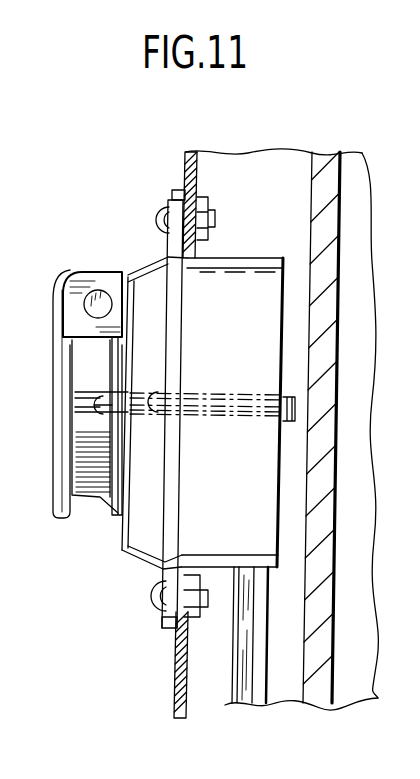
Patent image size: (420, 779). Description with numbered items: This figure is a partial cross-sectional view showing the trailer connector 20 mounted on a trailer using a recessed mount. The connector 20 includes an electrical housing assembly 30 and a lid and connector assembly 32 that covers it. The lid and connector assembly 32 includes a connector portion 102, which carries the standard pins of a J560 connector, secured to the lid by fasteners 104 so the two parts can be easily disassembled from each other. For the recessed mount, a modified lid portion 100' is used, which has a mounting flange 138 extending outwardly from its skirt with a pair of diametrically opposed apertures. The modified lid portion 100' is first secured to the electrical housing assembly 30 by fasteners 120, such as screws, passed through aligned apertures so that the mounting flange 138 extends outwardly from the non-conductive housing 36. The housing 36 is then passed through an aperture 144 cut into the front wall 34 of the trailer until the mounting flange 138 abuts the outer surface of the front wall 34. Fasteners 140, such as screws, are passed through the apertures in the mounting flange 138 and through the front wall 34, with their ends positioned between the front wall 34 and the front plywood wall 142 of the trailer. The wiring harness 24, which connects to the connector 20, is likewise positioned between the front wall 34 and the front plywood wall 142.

The trailer connector 20 is at (147, 253).
The wiring harness 24 is at (257, 706).
The electrical housing assembly 30 is at (222, 534).
The lid and connector assembly 32 is at (120, 524).
The front wall 34 is at (197, 163).
The housing 36 is at (255, 503).
The modified lid portion 100' is at (110, 573).
The connector portion 102 is at (88, 355).
The fasteners 104 is at (108, 386).
The fasteners 120 is at (152, 400).
The mounting flange 138 is at (170, 630).
The fasteners 140 is at (158, 213).
The front plywood wall 142 is at (330, 163).
The aperture 144 is at (220, 267).